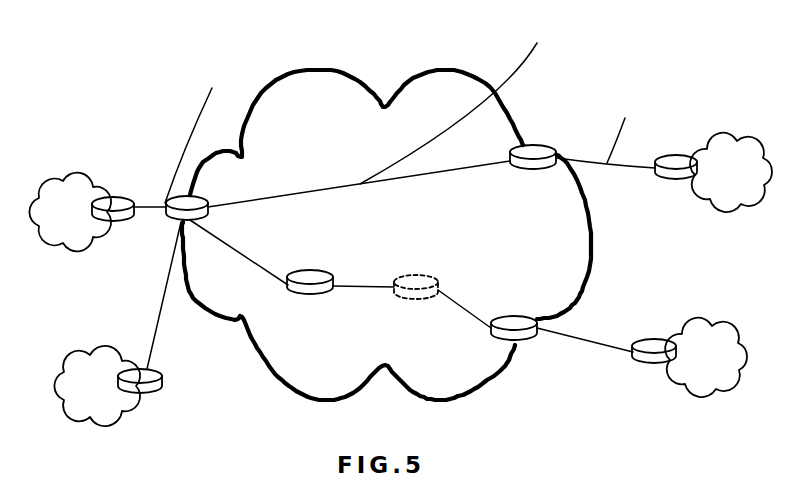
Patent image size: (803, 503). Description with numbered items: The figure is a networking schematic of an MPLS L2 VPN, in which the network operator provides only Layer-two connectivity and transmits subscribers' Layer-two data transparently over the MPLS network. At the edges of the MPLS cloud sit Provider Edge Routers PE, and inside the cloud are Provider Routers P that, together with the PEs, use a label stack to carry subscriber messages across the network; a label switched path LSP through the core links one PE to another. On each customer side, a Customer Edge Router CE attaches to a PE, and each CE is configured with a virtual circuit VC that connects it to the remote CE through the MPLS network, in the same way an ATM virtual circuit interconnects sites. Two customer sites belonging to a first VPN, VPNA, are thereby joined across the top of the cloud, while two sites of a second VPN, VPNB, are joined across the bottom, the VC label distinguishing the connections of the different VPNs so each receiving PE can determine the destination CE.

The Provider Edge Router PE is at (361, 232).
The Customer Edge Router CE is at (394, 266).
The Provider Router P is at (362, 275).
The label switched path LSP is at (455, 106).
The virtual circuit VC is at (423, 130).
The VPN A customer site VPNA is at (400, 192).
The VPN B customer site VPNB is at (400, 372).